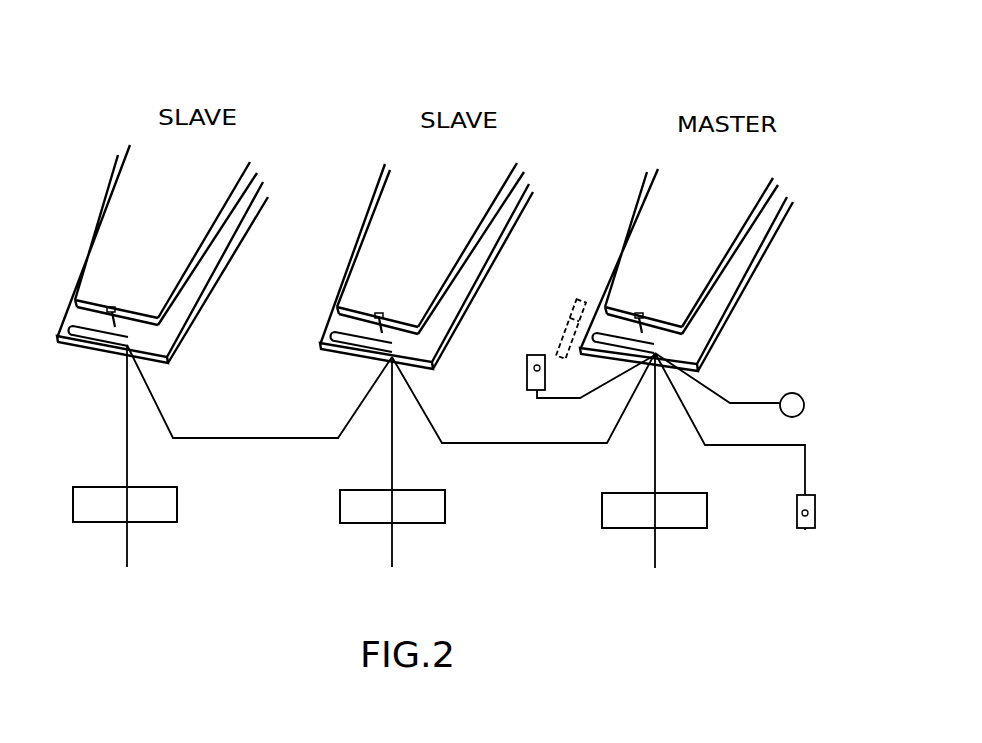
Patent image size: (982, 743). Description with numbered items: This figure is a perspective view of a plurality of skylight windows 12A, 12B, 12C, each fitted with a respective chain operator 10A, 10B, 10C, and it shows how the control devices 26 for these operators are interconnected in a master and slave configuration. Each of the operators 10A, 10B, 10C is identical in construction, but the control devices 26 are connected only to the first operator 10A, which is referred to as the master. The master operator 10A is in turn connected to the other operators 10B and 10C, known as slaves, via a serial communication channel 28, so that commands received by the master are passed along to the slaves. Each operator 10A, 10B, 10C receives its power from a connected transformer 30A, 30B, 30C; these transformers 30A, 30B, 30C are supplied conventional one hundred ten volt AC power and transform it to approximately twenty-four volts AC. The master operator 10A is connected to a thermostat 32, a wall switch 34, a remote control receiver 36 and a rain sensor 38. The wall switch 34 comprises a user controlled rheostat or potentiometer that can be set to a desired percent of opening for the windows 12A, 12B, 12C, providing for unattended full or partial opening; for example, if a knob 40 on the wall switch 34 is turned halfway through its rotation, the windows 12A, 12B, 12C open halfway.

The master operator 10A is at (613, 350).
The slave operator 10B is at (360, 348).
The slave operator 10C is at (98, 347).
The skylight window 12A is at (768, 265).
The skylight window 12B is at (490, 285).
The skylight window 12C is at (228, 285).
The control devices 26 is at (585, 502).
The serial communication channel 28 is at (208, 436).
The transformer 30A is at (697, 528).
The transformer 30B is at (445, 505).
The transformer 30C is at (177, 500).
The thermostat 32 is at (801, 397).
The wall switch 34 is at (815, 508).
The remote control receiver 36 is at (527, 380).
The rain sensor 38 is at (570, 312).
The knob 40 is at (805, 530).